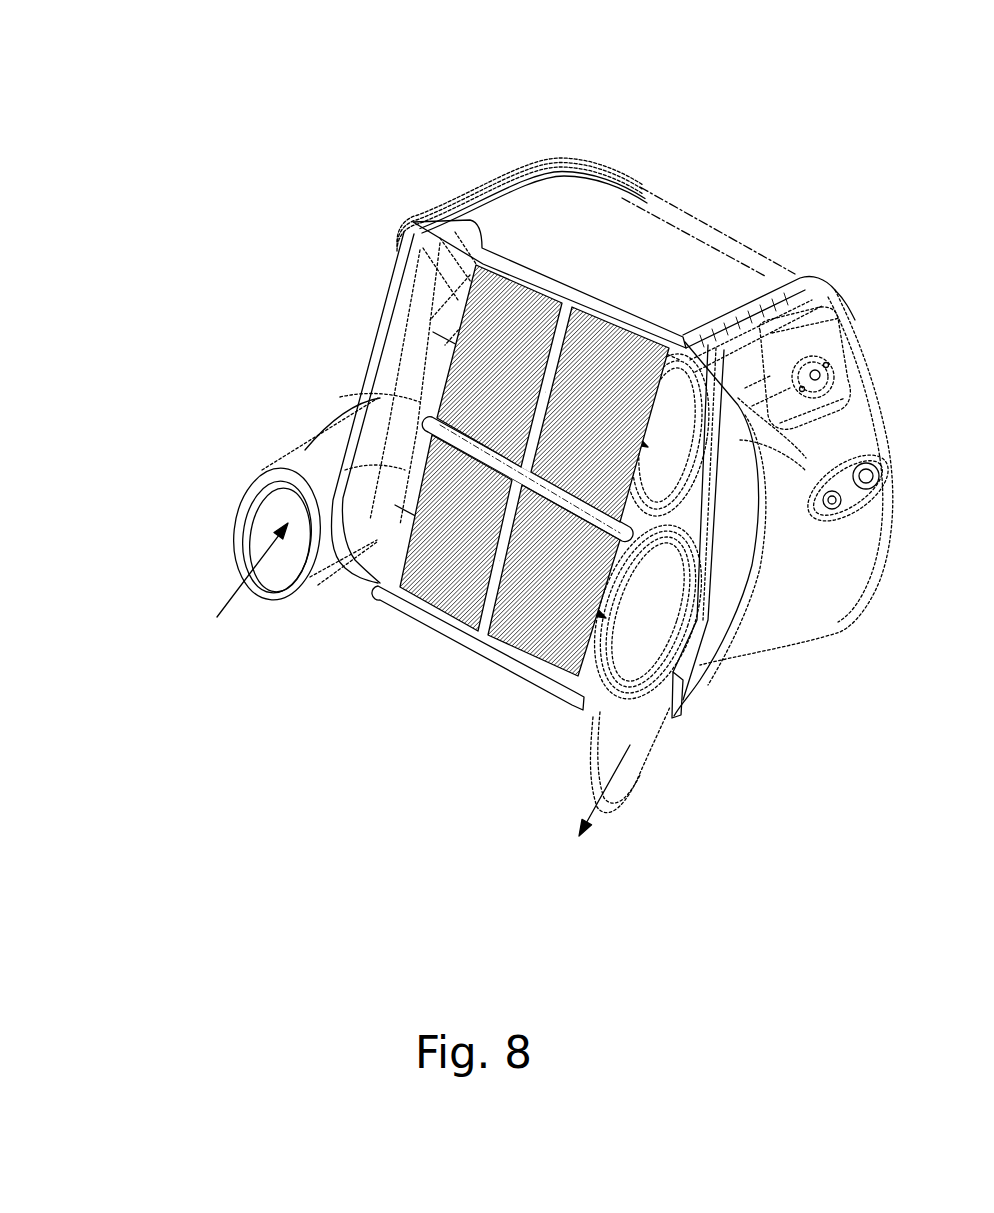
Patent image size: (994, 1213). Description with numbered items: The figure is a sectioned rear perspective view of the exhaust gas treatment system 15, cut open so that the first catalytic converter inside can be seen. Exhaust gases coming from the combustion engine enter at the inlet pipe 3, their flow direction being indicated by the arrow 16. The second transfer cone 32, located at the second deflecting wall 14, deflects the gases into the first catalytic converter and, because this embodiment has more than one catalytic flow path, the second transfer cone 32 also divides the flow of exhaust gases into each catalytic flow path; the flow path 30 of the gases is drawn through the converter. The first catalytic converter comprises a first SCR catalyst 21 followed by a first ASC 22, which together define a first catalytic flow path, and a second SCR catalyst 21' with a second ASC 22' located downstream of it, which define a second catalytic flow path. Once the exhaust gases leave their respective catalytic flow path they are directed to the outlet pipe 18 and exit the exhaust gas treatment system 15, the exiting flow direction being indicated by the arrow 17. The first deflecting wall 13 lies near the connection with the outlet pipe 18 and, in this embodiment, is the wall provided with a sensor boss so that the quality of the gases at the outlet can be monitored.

The inlet pipe 3 is at (307, 453).
The first deflecting wall 13 is at (823, 587).
The second deflecting wall 14 is at (490, 195).
The exhaust gas treatment system 15 is at (345, 187).
The arrow 16 is at (247, 575).
The arrow 17 is at (623, 760).
The outlet pipe 18 is at (674, 716).
The first SCR catalyst 21 is at (520, 333).
The first ASC 22 is at (610, 385).
The second SCR catalyst 21' is at (444, 589).
The second ASC 22' is at (539, 633).
The flow path 30 is at (445, 333).
The second transfer cone 32 is at (400, 320).